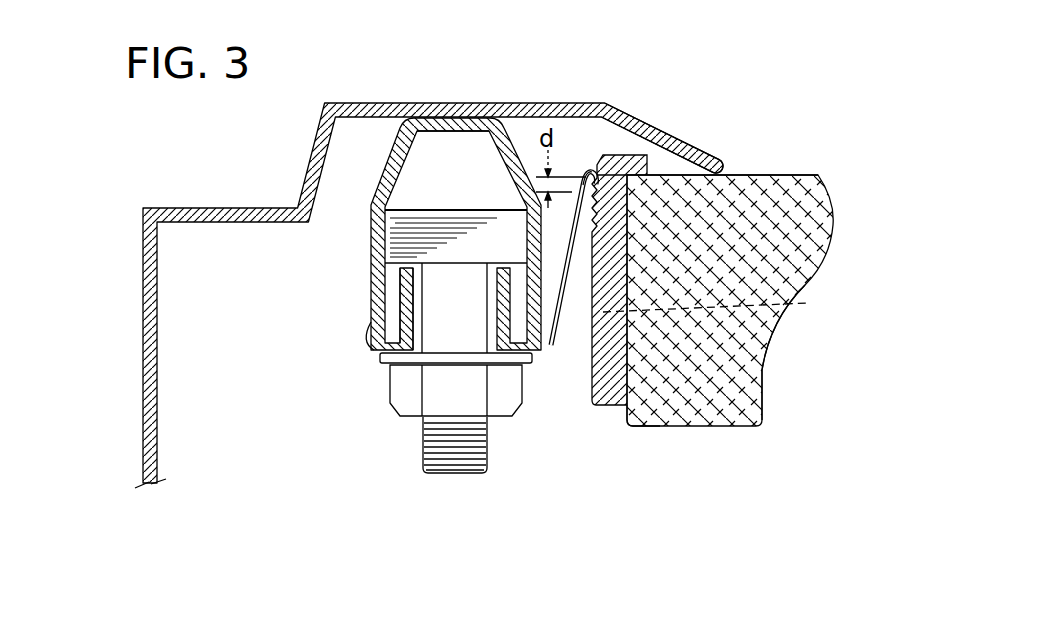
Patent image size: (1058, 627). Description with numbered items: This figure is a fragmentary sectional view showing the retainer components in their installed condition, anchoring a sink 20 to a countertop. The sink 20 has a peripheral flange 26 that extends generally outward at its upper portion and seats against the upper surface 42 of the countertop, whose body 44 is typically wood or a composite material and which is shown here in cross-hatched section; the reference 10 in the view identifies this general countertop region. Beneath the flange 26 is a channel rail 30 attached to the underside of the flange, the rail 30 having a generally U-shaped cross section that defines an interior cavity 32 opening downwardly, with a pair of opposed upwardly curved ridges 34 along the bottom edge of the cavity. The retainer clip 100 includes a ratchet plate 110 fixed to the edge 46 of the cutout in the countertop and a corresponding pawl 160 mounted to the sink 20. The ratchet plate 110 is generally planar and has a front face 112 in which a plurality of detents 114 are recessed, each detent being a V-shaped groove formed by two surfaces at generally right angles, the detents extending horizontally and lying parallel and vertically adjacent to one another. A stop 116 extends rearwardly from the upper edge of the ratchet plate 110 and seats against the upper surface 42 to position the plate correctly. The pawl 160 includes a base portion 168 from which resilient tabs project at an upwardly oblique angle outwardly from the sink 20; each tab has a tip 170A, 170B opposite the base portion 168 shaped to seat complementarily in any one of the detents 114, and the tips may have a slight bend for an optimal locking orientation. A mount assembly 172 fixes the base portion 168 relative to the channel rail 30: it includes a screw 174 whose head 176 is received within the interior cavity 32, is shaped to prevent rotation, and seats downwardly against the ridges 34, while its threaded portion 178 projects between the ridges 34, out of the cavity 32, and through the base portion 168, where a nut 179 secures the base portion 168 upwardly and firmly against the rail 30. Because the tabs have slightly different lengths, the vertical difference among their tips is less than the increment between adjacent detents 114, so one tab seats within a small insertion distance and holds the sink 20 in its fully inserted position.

The body / mounting block 10 is at (754, 290).
The sink 20 is at (128, 222).
The peripheral flange 26 is at (693, 157).
The channel rail 30 is at (380, 239).
The interior cavity 32 is at (418, 158).
The upwardly curved ridges 34 is at (400, 282).
The upper surface 42 is at (780, 175).
The body 44 is at (767, 366).
The edge 46 is at (625, 415).
The retainer clip 100 is at (400, 431).
The ratchet plate 110 is at (578, 279).
The front face 112 is at (590, 358).
The detents 114 is at (589, 170).
The stop 116 is at (640, 155).
The pawl 160 is at (353, 347).
The base portion 168 is at (400, 372).
The tip 170A is at (739, 305).
The tip 170B is at (586, 182).
The mount assembly 172 is at (389, 431).
The screw 174 is at (389, 508).
The head 176 is at (393, 218).
The threaded portion 178 is at (455, 465).
The nut 179 is at (402, 405).